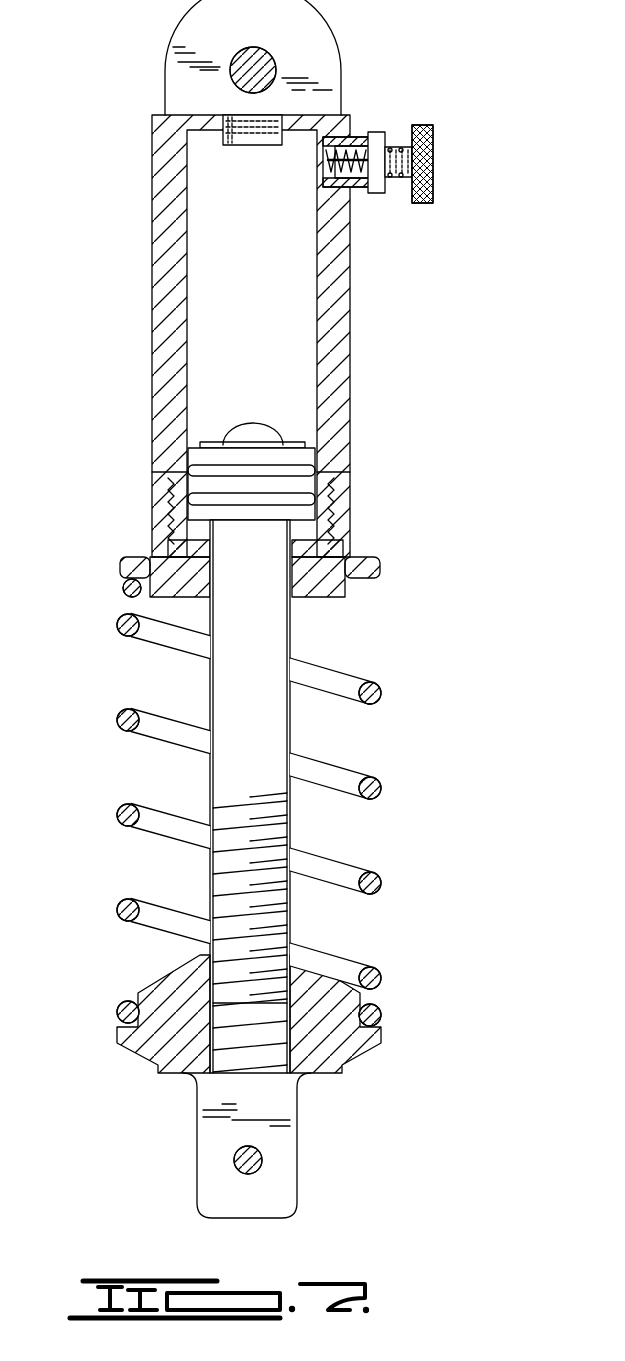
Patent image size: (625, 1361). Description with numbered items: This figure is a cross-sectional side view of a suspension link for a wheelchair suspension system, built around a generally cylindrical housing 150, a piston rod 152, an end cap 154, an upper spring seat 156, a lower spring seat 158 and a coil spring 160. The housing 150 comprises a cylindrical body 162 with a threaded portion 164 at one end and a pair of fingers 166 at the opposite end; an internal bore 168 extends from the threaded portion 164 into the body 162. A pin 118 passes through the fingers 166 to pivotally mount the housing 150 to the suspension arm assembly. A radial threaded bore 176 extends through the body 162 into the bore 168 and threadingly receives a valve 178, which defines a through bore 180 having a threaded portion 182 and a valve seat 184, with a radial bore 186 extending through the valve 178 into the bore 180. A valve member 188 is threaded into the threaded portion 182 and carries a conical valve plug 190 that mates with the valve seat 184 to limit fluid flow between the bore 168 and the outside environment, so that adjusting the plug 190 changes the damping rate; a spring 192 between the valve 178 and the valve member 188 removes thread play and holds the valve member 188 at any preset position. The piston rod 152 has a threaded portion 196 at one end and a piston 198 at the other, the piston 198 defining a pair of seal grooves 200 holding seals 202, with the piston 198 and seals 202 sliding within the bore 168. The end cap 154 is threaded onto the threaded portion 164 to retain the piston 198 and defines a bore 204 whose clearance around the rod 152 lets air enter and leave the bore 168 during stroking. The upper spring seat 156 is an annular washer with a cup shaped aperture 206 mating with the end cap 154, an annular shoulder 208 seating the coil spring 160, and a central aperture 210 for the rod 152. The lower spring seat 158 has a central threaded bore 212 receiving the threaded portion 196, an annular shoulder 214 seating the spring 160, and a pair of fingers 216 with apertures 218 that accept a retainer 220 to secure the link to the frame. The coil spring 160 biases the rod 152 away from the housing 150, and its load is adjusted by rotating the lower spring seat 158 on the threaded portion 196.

The pin 118 is at (232, 72).
The housing 150 is at (122, 292).
The piston rod 152 is at (277, 730).
The end cap 154 is at (152, 493).
The upper spring seat 156 is at (122, 560).
The lower spring seat 158 is at (117, 1035).
The coil spring 160 is at (377, 878).
The cylindrical body 162 is at (160, 210).
The threaded portion 164 is at (345, 512).
The fingers 166 is at (313, 20).
The internal bore 168 is at (190, 318).
The radial threaded bore 176 is at (322, 185).
The valve 178 is at (456, 164).
The through bore 180 is at (376, 193).
The threaded portion 182 is at (398, 147).
The valve seat 184 is at (327, 164).
The radial bore 186 is at (357, 197).
The valve member 188 is at (433, 137).
The valve plug 190 is at (350, 157).
The spring 192 is at (388, 177).
The threaded portion 196 is at (285, 927).
The piston 198 is at (237, 437).
The seal grooves 200 is at (190, 468).
The seals 202 is at (315, 494).
The bore 204 is at (213, 574).
The cup shaped aperture 206 is at (320, 586).
The annular shoulder 208 is at (124, 588).
The central aperture 210 is at (215, 594).
The threaded bore 212 is at (226, 1062).
The annular shoulder 214 is at (378, 1018).
The fingers 216 is at (203, 1200).
The apertures 218 is at (255, 1173).
The retainer 220 is at (233, 1158).